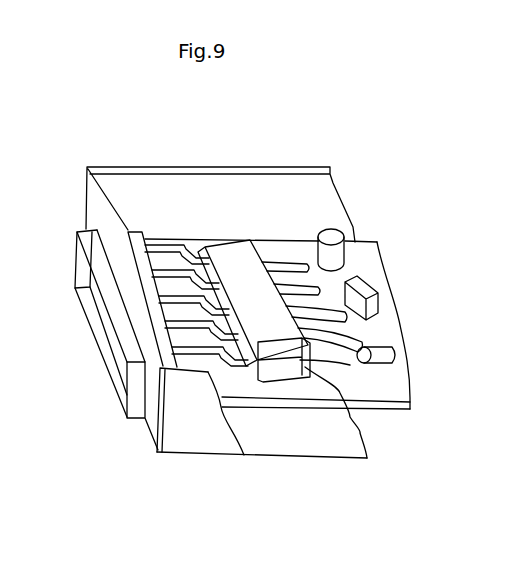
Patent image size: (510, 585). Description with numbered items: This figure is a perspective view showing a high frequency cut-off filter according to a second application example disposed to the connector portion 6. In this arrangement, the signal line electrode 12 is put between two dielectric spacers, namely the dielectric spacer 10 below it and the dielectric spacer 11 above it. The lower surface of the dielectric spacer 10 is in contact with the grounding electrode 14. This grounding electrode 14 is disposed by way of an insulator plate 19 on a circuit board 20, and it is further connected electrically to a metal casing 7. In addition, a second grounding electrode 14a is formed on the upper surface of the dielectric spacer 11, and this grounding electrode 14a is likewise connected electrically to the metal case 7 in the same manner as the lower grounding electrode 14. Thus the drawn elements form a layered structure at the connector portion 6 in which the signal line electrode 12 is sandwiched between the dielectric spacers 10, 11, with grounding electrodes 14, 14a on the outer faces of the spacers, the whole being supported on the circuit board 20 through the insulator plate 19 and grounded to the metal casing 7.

The connector portion 6 is at (117, 305).
The metal casing 7 is at (194, 442).
The dielectric spacer 10 is at (407, 372).
The dielectric spacer 11 is at (305, 358).
The signal line electrode 12 is at (190, 262).
The grounding electrode 14 is at (305, 366).
The grounding electrode 14a is at (197, 253).
The insulator plate 19 is at (250, 370).
The circuit board 20 is at (383, 268).